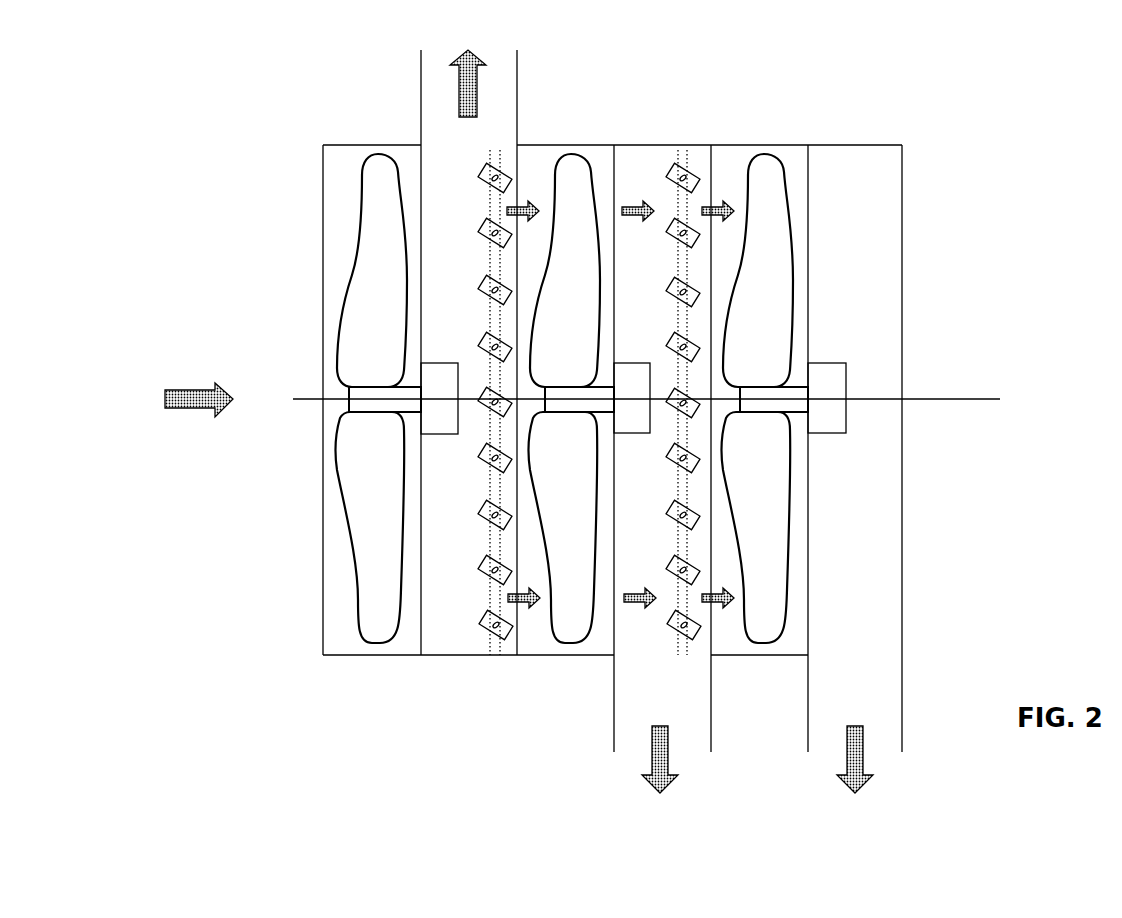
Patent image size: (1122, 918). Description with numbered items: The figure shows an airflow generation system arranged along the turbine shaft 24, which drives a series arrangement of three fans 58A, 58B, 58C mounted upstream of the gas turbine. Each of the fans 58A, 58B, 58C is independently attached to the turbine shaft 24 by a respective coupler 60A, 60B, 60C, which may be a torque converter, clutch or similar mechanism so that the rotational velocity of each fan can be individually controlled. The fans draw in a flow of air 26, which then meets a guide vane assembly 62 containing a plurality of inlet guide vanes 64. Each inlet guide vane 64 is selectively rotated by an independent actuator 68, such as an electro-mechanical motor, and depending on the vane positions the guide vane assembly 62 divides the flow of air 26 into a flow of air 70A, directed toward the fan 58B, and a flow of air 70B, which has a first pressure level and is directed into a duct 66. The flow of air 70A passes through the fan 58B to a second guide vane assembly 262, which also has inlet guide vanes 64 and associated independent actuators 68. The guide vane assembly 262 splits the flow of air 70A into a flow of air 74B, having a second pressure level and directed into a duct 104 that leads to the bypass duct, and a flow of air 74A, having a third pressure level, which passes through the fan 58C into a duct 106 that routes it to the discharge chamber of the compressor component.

The turbine shaft 24 is at (935, 399).
The flow of air 26 is at (192, 410).
The fan 58A is at (378, 154).
The fan 58B is at (572, 154).
The fan 58C is at (763, 154).
The coupler 60A is at (437, 363).
The coupler 60B is at (627, 363).
The coupler 60C is at (823, 363).
The guide vane assembly 62 is at (472, 613).
The inlet guide vanes 64 is at (692, 632).
The duct 66 is at (517, 78).
The actuator 68 is at (686, 638).
The flow of air 70A is at (633, 593).
The flow of air 70B is at (457, 80).
The flow of air 74A is at (878, 815).
The flow of air 74B is at (670, 790).
The duct 104 is at (711, 733).
The duct 106 is at (902, 660).
The guide vane assembly 262 is at (655, 650).